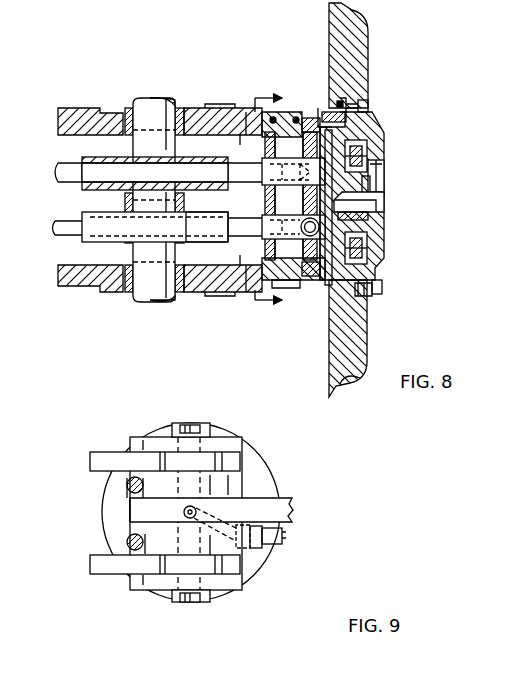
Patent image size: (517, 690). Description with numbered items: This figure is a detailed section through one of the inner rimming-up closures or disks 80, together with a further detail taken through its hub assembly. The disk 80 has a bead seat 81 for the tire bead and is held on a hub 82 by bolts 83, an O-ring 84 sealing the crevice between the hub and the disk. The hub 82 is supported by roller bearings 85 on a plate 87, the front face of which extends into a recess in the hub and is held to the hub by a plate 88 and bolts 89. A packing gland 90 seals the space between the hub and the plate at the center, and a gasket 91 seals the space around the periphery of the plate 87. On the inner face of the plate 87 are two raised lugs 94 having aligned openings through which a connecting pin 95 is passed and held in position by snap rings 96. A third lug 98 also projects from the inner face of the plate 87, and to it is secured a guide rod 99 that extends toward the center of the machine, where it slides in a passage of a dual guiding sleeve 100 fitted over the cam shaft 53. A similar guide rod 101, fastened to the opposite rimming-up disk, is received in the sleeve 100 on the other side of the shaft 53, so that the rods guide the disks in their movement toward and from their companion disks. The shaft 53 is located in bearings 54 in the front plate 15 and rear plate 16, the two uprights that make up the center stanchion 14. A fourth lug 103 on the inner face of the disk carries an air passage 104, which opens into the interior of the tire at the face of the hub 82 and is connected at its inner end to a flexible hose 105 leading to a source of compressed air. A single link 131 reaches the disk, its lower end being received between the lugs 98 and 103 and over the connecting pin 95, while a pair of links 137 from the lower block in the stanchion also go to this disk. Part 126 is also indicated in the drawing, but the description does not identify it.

In FIG. 8, the center stanchion 14 is at (60, 110).
In FIG. 8, the front plate 15 is at (252, 292).
In FIG. 8, the rear plate 16 is at (92, 112).
In FIG. 8, the shaft 53 is at (158, 292).
In FIG. 8, the bearings 54 is at (184, 108).
In FIG. 8, the rimming-up disk 80 is at (348, 30).
In FIG. 9, the rimming-up disk 80 is at (191, 512).
In FIG. 8, the bead seat 81 is at (355, 381).
In FIG. 8, the hub 82 is at (386, 142).
In FIG. 8, the bolts 83 is at (366, 110).
In FIG. 8, the O-ring 84 is at (342, 104).
In FIG. 8, the roller bearings 85 is at (368, 160).
In FIG. 8, the plate 87 is at (342, 128).
In FIG. 9, the plate 87 is at (262, 542).
In FIG. 8, the plate 88 is at (384, 178).
In FIG. 8, the bolts 89 is at (378, 212).
In FIG. 8, the packing gland 90 is at (382, 176).
In FIG. 8, the gasket 91 is at (322, 110).
In FIG. 8, the raised lugs 94 is at (316, 118).
In FIG. 9, the raised lugs 94 is at (153, 442).
In FIG. 8, the connecting pin 95 is at (292, 130).
In FIG. 9, the connecting pin 95 is at (188, 603).
In FIG. 8, the snap rings 96 is at (300, 120).
In FIG. 9, the snap rings 96 is at (208, 433).
In FIG. 8, the third lug 98 is at (272, 178).
In FIG. 9, the third lug 98 is at (232, 477).
In FIG. 8, the guide rod 99 is at (60, 163).
In FIG. 9, the guide rod 99 is at (127, 485).
In FIG. 8, the dual guiding sleeve 100 is at (108, 161).
In FIG. 8, the guide rod 101 is at (70, 222).
In FIG. 9, the guide rod 101 is at (127, 542).
In FIG. 8, the fourth lug 103 is at (266, 236).
In FIG. 9, the fourth lug 103 is at (230, 550).
In FIG. 8, the air passage 104 is at (378, 200).
In FIG. 9, the air passage 104 is at (214, 530).
In FIG. 9, the flexible hose 105 is at (284, 536).
In FIG. 8, the spacer 126 is at (204, 108).
In FIG. 8, the link 131 is at (262, 210).
In FIG. 9, the link 131 is at (285, 508).
In FIG. 8, the links 137 is at (246, 114).
In FIG. 9, the links 137 is at (96, 461).